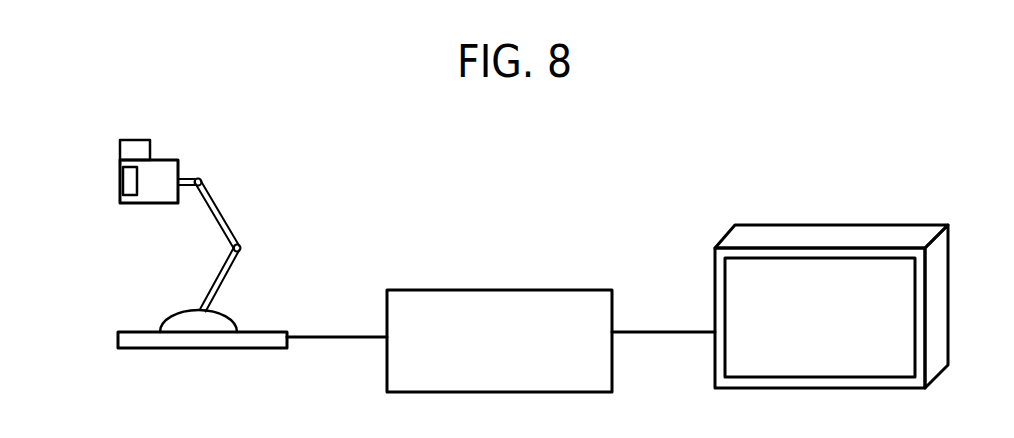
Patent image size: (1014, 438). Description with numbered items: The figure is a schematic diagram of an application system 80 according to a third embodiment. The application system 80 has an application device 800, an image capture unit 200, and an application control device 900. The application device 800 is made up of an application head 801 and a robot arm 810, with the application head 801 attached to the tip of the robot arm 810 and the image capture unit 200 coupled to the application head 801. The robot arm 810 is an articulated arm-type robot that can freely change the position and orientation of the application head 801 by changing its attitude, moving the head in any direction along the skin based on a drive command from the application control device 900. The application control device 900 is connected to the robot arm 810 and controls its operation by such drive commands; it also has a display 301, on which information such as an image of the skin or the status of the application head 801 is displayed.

The application system 80 is at (655, 168).
The image capture unit 200 is at (140, 140).
The application device 800 is at (143, 205).
The application head 801 is at (120, 177).
The robot arm 810 is at (233, 227).
The application control device 900 is at (540, 290).
The display 301 is at (912, 225).